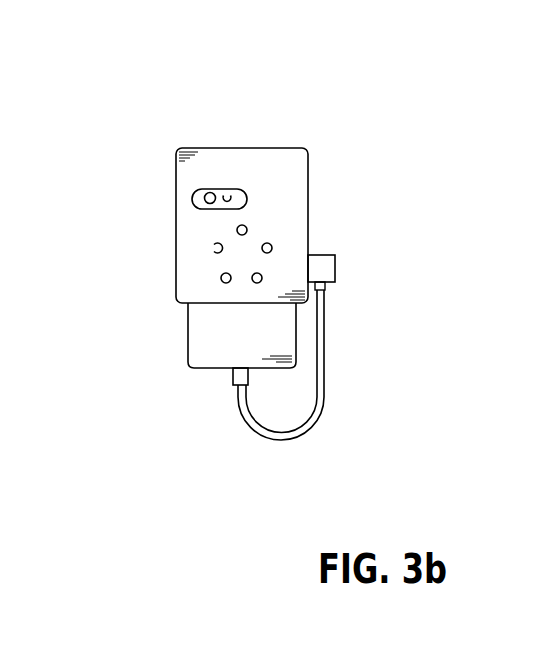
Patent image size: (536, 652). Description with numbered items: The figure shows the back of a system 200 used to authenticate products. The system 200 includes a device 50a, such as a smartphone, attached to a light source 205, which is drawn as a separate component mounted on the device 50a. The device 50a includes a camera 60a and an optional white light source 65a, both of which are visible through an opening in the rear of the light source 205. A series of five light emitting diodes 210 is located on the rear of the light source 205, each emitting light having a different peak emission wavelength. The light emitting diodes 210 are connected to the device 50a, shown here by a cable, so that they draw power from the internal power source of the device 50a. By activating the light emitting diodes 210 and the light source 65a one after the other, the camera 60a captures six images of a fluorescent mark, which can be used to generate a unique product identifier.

The system 200 is at (168, 120).
The light source 205 is at (258, 160).
The camera 60a is at (210, 198).
The light source 65a is at (227, 198).
The light emitting diodes 210 is at (205, 250).
The device 50a is at (277, 317).